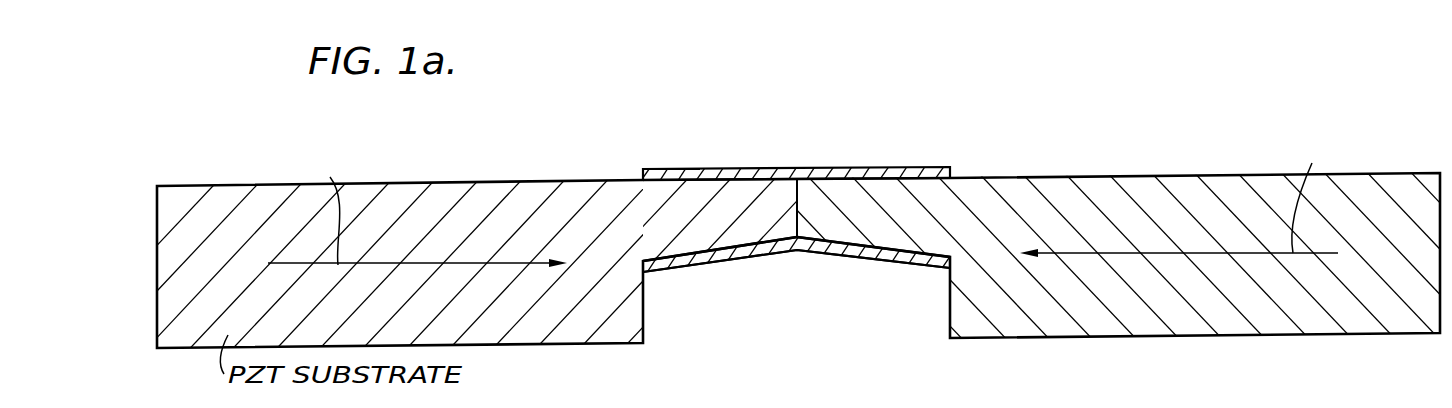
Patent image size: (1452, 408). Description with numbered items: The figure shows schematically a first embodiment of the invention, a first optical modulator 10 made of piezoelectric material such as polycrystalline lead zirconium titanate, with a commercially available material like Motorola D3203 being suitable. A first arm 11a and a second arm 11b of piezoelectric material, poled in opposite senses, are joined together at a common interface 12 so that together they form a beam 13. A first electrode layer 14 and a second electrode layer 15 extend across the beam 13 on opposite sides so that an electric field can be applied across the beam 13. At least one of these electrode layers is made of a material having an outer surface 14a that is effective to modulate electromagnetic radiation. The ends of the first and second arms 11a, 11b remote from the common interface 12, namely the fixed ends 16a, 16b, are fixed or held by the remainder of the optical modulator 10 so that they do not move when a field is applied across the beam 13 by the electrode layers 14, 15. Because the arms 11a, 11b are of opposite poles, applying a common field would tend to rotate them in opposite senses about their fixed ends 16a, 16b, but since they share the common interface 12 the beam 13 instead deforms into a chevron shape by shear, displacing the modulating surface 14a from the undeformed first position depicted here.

The first optical modulator 10 is at (1193, 148).
The first arm 11a is at (742, 235).
The second arm 11b is at (897, 238).
The common interface 12 is at (797, 202).
The beam 13 is at (740, 266).
The first electrode layer 14 is at (820, 167).
The outer surface 14a is at (688, 163).
The second electrode layer 15 is at (659, 268).
The fixed end of first arm 16a is at (607, 207).
The fixed end of second arm 16b is at (937, 200).